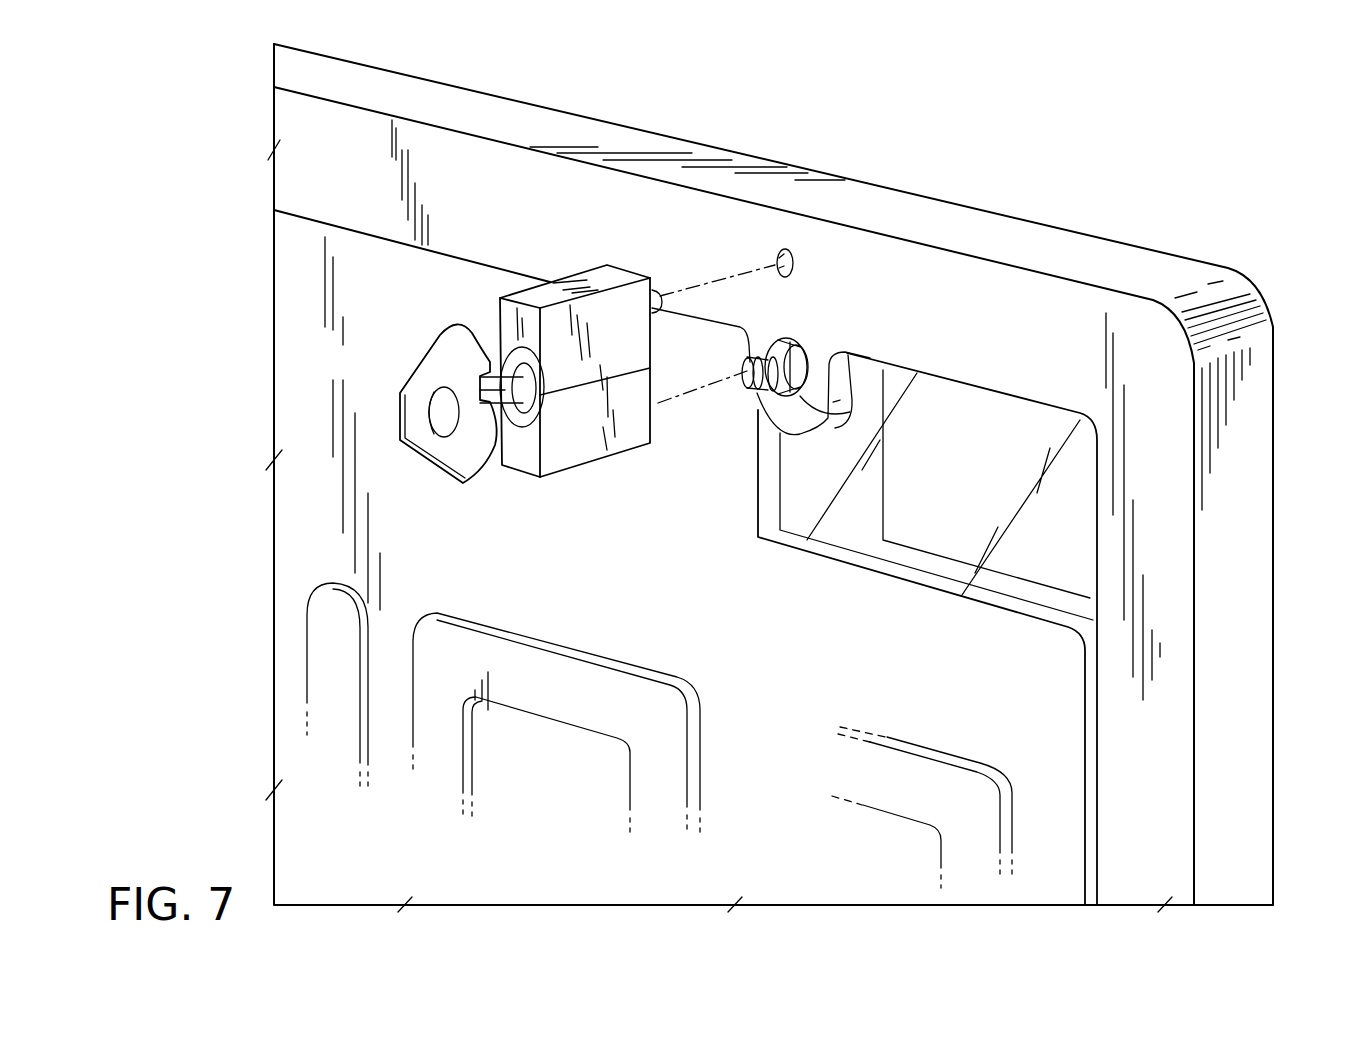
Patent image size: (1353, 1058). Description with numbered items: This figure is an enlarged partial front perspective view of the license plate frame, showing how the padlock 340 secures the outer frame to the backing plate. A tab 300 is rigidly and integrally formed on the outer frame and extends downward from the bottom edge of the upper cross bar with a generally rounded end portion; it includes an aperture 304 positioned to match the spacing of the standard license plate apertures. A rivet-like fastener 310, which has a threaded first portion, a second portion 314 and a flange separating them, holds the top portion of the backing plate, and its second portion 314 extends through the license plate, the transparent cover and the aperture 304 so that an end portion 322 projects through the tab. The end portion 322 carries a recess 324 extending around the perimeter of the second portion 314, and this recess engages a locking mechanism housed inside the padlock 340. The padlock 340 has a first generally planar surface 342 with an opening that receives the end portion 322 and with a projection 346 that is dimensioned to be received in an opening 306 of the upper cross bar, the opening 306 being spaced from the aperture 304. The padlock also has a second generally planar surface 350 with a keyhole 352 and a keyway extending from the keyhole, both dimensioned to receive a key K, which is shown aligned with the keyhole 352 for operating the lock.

The tab 300 is at (808, 429).
The aperture 304 is at (806, 414).
The opening 306 is at (778, 258).
The rivet-like fastener 310 is at (812, 361).
The second portion 314 is at (802, 358).
The end portion 322 is at (748, 380).
The recess 324 is at (792, 352).
The padlock 340 is at (607, 375).
The first generally planar surface 342 is at (653, 378).
The projection 346 is at (658, 288).
The second generally planar surface 350 is at (527, 455).
The keyhole 352 is at (480, 378).
The key K is at (440, 429).